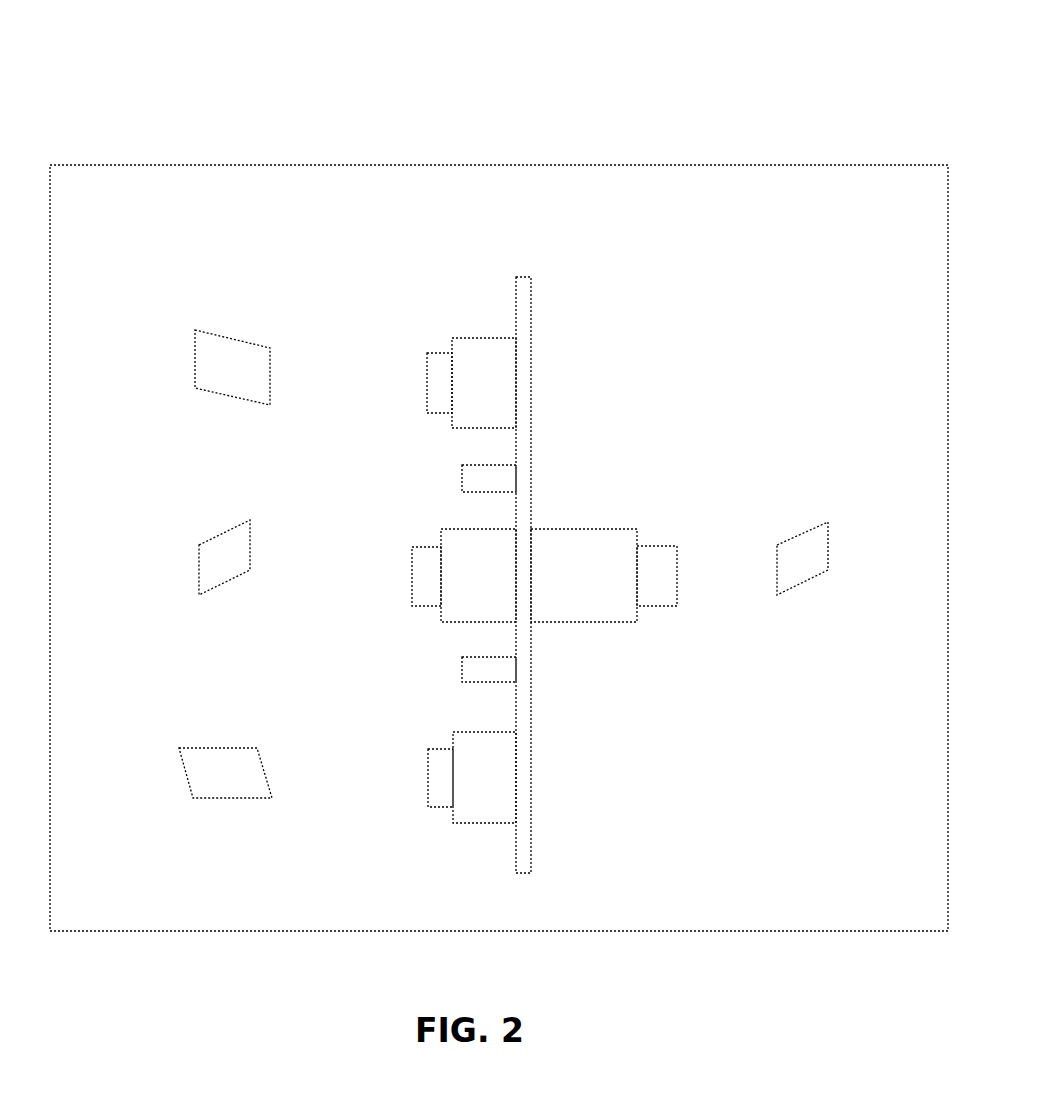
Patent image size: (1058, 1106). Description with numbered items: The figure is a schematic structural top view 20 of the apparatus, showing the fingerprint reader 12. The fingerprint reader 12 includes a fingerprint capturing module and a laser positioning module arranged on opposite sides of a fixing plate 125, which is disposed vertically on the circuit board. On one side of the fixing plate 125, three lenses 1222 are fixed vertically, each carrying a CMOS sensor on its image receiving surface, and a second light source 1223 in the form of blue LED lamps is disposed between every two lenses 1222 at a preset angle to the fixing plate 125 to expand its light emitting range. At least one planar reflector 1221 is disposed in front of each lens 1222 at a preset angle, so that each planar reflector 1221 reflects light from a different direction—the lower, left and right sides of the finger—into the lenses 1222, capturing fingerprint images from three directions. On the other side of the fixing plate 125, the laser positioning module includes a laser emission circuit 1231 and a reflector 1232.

The schematic structural top view 20 is at (240, 0).
The fingerprint reader 12 is at (690, 165).
The fixing plate 125 is at (530, 277).
The planar reflectors 1221 is at (230, 338).
The lenses 1222 is at (452, 338).
The second light source 1223 is at (462, 478).
The laser emission circuit 1231 is at (600, 529).
The reflector 1232 is at (828, 522).